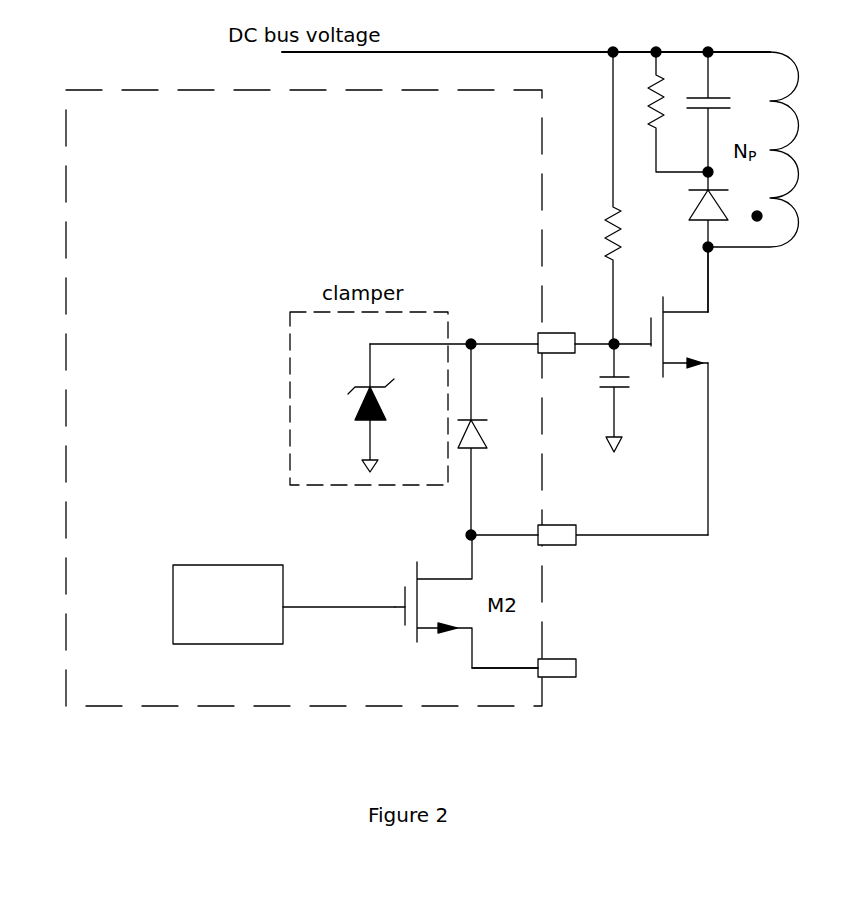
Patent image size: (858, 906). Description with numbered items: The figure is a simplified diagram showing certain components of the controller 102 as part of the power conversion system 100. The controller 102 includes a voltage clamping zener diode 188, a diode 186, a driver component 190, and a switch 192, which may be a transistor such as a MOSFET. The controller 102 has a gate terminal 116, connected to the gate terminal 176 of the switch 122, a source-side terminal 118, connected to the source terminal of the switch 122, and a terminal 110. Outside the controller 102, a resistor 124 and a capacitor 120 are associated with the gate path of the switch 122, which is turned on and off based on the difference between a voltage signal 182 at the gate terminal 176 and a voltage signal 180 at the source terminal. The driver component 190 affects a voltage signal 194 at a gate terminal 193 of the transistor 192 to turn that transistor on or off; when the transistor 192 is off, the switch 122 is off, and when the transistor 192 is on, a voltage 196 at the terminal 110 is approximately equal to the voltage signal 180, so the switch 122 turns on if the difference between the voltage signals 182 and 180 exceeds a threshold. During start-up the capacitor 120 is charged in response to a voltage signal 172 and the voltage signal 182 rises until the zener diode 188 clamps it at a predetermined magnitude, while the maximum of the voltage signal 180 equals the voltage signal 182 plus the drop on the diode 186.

The power conversion system 100 is at (752, 665).
The controller 102 is at (70, 709).
The terminal 110 is at (556, 659).
The terminal GATE 116 is at (546, 355).
The terminal SW 118 is at (552, 546).
The capacitor 120 is at (601, 390).
The switch 122 is at (708, 345).
The resistor 124 is at (606, 224).
The voltage signal 172 is at (512, 52).
The gate terminal 176 is at (651, 323).
The voltage signal 180 is at (708, 511).
The voltage signal 182 is at (627, 345).
The diode 186 is at (478, 450).
The voltage clamper 188 is at (355, 386).
The driver component 190 is at (216, 565).
The switch 192 is at (404, 591).
The gate terminal 193 is at (401, 612).
The voltage signal 194 is at (325, 608).
The voltage 196 is at (510, 668).